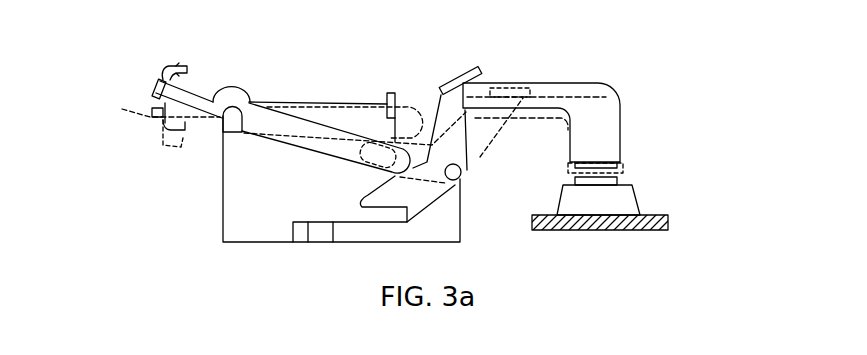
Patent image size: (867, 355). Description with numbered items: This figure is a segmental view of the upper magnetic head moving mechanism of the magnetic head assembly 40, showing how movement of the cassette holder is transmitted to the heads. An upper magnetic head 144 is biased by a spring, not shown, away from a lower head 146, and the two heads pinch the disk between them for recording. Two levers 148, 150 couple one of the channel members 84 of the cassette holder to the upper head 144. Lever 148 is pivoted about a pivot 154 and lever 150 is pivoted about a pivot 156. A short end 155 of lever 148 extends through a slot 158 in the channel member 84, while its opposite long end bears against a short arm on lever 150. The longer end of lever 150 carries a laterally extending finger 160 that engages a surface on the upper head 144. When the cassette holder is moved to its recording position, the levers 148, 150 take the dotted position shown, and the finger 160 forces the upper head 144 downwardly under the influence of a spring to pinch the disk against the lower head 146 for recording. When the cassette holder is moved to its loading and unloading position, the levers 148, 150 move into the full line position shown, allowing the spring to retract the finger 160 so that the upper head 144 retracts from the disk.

The magnetic head assembly 40 is at (669, 88).
The channel member 84 is at (170, 65).
The upper magnetic head 144 is at (622, 152).
The lower head 146 is at (640, 198).
The lever 148 is at (248, 99).
The lever 150 is at (466, 143).
The pivot 154 is at (222, 135).
The short end 155 is at (193, 98).
The pivot 156 is at (459, 179).
The slot 158 is at (153, 112).
The finger 160 is at (453, 80).